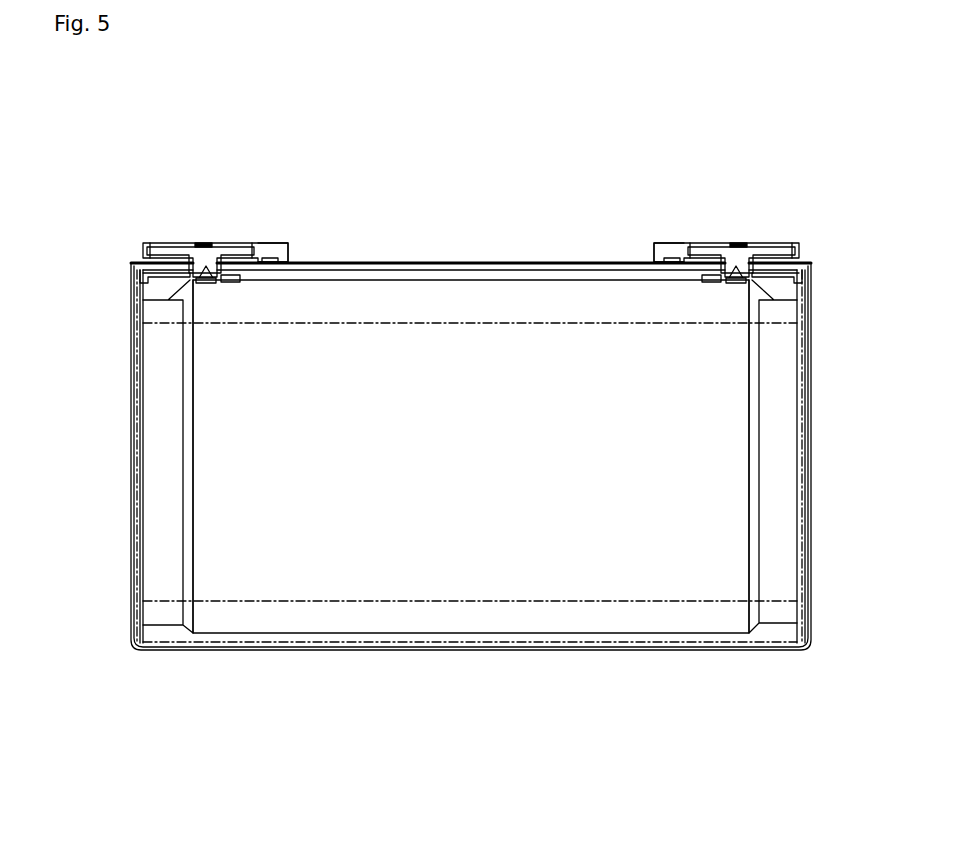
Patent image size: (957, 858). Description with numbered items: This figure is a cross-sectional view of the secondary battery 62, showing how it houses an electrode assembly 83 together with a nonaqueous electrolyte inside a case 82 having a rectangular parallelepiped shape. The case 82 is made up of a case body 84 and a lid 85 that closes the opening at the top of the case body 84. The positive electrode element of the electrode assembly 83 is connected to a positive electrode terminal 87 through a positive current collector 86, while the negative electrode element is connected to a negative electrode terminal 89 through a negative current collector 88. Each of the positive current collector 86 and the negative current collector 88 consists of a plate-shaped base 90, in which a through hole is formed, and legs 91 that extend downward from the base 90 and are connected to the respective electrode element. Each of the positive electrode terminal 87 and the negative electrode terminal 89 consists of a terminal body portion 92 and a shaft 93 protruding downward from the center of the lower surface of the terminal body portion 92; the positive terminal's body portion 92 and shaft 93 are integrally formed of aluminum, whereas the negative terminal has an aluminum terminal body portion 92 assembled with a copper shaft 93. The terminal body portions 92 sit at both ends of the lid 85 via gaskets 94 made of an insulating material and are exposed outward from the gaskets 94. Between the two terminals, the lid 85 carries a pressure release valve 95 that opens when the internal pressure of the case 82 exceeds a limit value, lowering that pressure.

The secondary battery 62 is at (148, 670).
The case 82 is at (153, 183).
The electrode assembly 83 is at (303, 580).
The case body 84 is at (133, 278).
The lid 85 is at (142, 278).
The positive current collector 86 is at (160, 434).
The positive electrode terminal 87 is at (186, 243).
The negative current collector 88 is at (780, 447).
The negative electrode terminal 89 is at (773, 246).
The base 90 is at (228, 283).
The legs 91 is at (178, 498).
The terminal body portion 92 is at (233, 248).
The shaft 93 is at (205, 272).
The gaskets 94 is at (272, 244).
The pressure release valve 95 is at (470, 262).